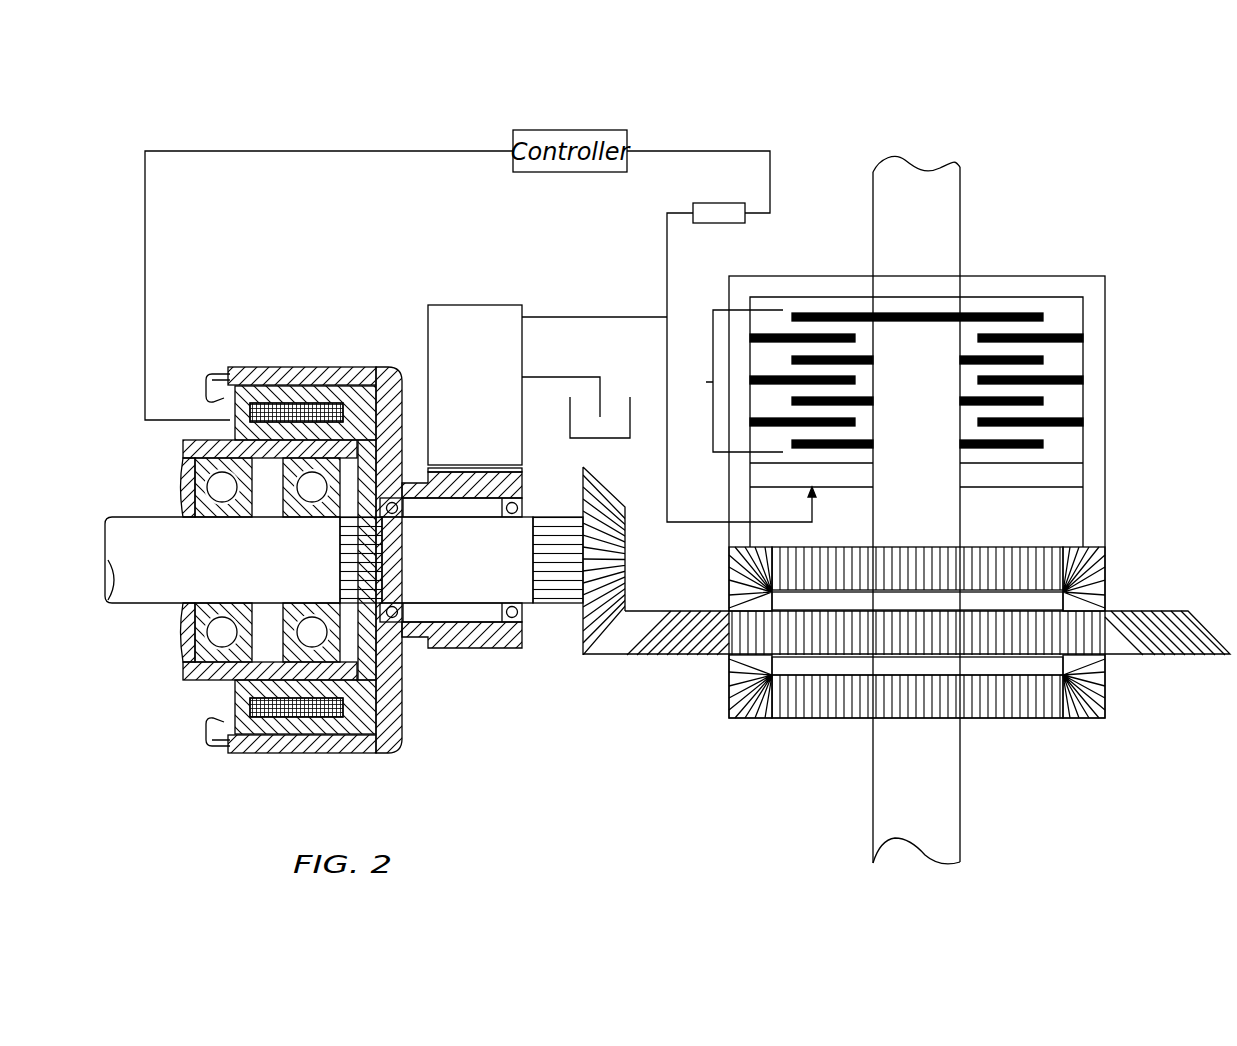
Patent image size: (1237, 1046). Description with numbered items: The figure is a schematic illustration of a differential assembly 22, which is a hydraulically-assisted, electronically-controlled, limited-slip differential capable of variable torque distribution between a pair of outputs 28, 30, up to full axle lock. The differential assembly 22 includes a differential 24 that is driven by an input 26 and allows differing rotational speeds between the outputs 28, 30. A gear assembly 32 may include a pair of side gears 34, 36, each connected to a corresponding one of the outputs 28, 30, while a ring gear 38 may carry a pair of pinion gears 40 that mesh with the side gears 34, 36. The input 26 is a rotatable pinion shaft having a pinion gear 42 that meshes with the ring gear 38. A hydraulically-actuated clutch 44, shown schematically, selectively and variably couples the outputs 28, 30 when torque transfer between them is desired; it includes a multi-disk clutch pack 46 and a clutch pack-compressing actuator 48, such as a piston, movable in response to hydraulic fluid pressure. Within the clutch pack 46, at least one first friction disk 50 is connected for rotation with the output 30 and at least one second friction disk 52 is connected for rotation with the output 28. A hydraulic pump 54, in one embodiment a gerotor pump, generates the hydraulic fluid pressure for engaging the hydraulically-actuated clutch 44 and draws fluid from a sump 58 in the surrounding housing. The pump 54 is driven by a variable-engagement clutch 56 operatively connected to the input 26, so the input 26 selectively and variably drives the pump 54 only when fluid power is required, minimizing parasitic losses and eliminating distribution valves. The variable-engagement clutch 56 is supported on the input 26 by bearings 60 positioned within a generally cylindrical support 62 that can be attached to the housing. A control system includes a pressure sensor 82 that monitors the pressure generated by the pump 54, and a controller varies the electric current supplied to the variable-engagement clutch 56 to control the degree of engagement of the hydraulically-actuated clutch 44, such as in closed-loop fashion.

The differential assembly 22 is at (913, 449).
The differential 24 is at (1077, 271).
The input 26 is at (238, 574).
The output 28 is at (920, 183).
The output 30 is at (893, 817).
The gear assembly 32 is at (913, 642).
The side gear 34 is at (1022, 555).
The side gear 36 is at (1003, 705).
The ring gear 38 is at (1150, 645).
The pinion gears 40 is at (735, 672).
The pinion gear 42 is at (605, 570).
The hydraulically-actuated clutch 44 is at (1107, 305).
The multi-disk clutch pack 46 is at (920, 381).
The clutch pack-compressing actuator 48 is at (1065, 470).
The first friction disk 50 is at (1043, 403).
The second friction disk 52 is at (855, 382).
The hydraulic pump 54 is at (445, 305).
The variable-engagement clutch 56 is at (292, 364).
The sump 58 is at (600, 442).
The bearings 60 is at (195, 500).
The cylindrical support 62 is at (193, 452).
The pressure sensor 82 is at (703, 205).